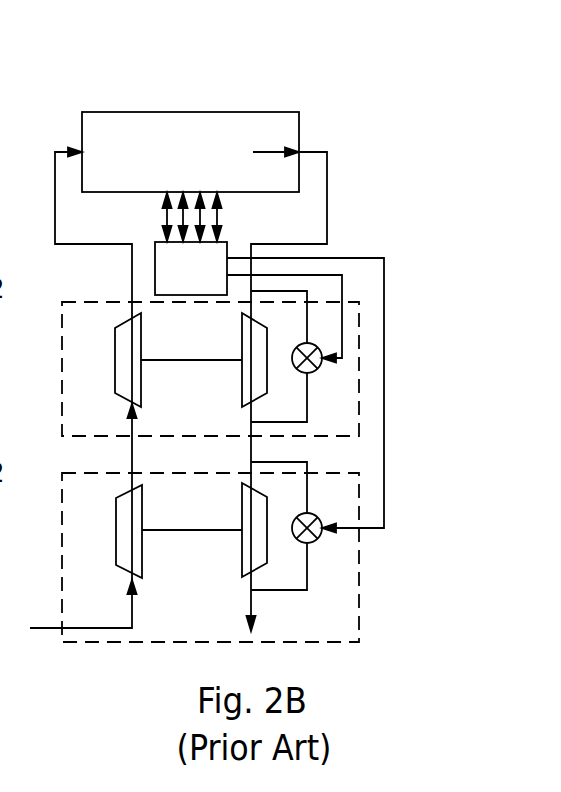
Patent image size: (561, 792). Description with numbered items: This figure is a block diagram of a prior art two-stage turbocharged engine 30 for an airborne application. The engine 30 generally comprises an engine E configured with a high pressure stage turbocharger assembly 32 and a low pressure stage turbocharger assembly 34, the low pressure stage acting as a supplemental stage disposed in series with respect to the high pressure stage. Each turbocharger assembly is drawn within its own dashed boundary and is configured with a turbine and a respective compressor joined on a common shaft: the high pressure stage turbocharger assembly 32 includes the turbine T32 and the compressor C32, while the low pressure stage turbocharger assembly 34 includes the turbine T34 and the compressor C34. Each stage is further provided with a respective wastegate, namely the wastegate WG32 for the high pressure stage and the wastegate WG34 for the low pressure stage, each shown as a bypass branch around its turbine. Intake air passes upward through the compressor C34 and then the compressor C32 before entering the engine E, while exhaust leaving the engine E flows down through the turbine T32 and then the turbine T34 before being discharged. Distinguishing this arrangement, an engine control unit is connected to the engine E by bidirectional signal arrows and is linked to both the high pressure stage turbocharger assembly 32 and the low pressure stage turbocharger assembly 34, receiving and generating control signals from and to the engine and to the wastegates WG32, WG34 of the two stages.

The two-stage turbocharged engine 30 is at (328, 120).
The high pressure stage turbocharger assembly 32 is at (62, 357).
The low pressure stage turbocharger assembly 34 is at (62, 532).
The compressor C32 is at (141, 340).
The turbine T32 is at (242, 377).
The wastegate WG32 is at (310, 371).
The compressor C34 is at (142, 510).
The turbine T34 is at (242, 547).
The wastegate WG34 is at (310, 541).